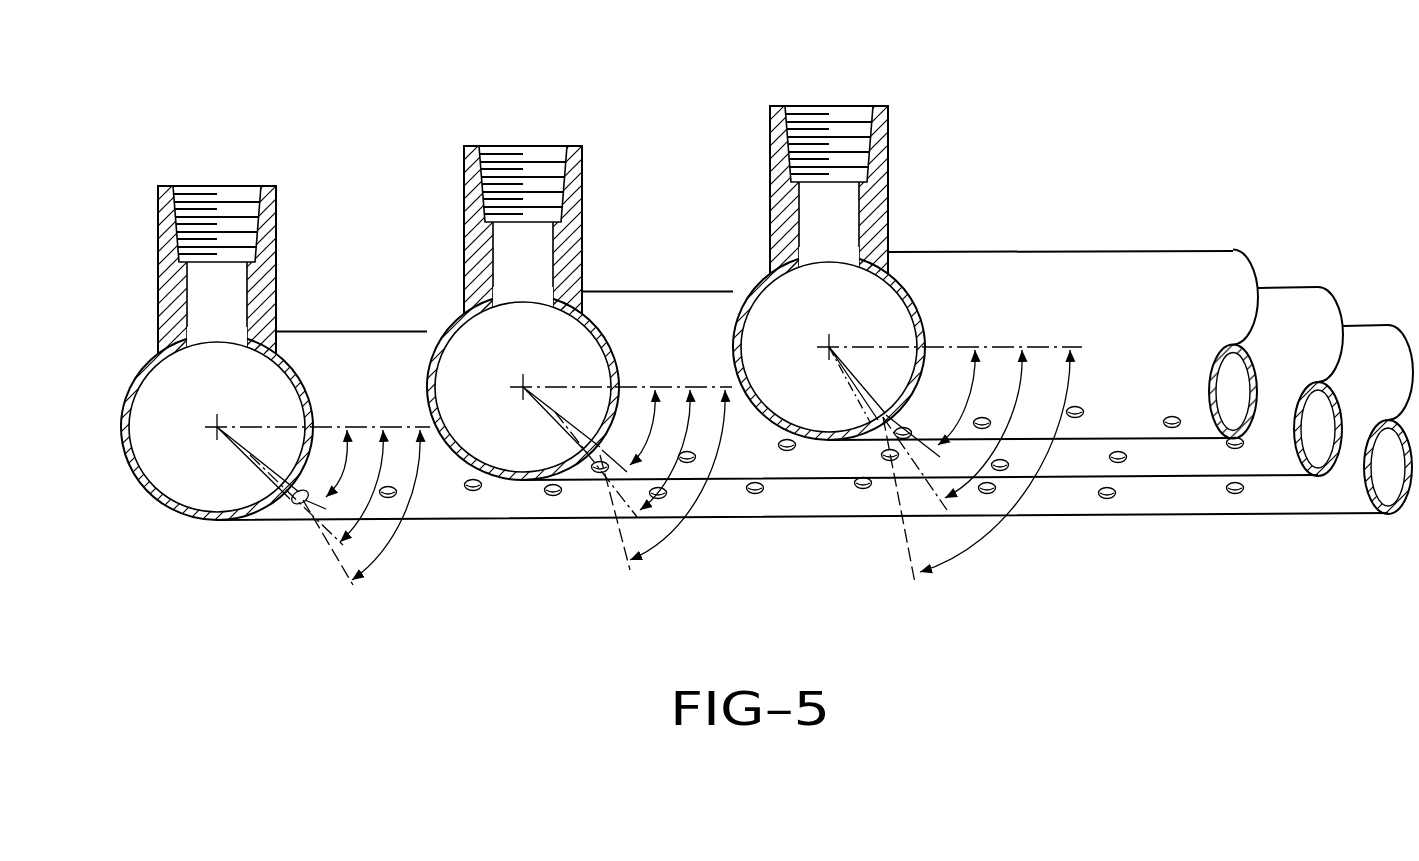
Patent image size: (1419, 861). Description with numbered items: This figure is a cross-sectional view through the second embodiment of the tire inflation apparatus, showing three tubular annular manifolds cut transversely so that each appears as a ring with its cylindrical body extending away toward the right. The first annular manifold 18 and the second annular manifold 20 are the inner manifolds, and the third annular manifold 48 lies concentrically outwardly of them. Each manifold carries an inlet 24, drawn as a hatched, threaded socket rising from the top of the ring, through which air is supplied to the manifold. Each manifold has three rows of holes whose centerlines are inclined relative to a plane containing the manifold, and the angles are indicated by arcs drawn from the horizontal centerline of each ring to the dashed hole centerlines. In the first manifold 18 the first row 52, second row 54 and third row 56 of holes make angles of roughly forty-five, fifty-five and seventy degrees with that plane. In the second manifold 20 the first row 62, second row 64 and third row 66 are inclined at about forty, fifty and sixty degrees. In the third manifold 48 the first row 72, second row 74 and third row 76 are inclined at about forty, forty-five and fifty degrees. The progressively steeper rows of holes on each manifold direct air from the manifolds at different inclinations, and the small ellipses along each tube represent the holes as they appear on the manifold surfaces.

The first annular manifold 18 is at (812, 438).
The second annular manifold 20 is at (502, 476).
The inlet 24 is at (243, 186).
The third annular manifold 48 is at (163, 502).
The first row of holes 52 is at (910, 408).
The second row of holes 54 is at (875, 437).
The third row of holes 56 is at (862, 436).
The first row of holes 62 is at (617, 440).
The second row of holes 64 is at (598, 463).
The third row of holes 66 is at (578, 467).
The first row of holes 72 is at (302, 486).
The second row of holes 74 is at (299, 504).
The third row of holes 76 is at (285, 497).